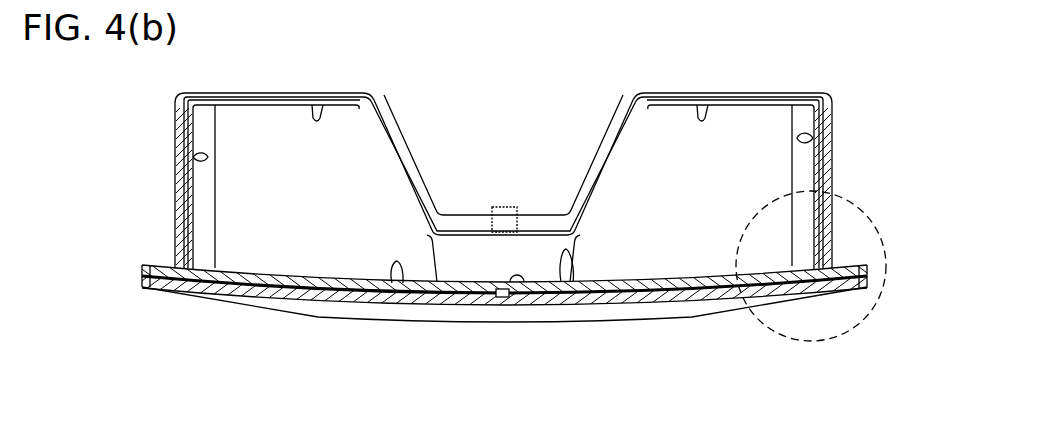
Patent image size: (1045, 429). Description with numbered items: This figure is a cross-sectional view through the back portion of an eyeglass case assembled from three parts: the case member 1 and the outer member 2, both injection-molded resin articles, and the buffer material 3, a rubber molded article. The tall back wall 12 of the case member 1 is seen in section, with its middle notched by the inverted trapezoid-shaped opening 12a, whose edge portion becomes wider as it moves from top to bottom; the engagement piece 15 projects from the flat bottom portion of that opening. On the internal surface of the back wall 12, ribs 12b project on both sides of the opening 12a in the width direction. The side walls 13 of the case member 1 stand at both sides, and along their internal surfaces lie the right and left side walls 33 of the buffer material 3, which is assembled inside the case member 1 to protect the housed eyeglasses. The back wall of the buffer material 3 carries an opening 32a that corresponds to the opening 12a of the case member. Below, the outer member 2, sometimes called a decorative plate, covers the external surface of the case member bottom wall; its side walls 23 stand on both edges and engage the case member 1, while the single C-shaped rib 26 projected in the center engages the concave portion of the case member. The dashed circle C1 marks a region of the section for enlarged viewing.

The case member 1 is at (247, 280).
The outer member 2 is at (300, 300).
The buffer material 3 is at (398, 264).
The back wall 12 is at (237, 92).
The opening 12a is at (398, 150).
The ribs 12b is at (318, 116).
The side walls 13 is at (176, 193).
The engagement piece 15 is at (498, 207).
The side walls 23 is at (143, 270).
The C-shaped rib 26 is at (517, 289).
The opening 32a is at (566, 255).
The side walls 33 is at (193, 157).
The enlarged region C1 is at (878, 216).